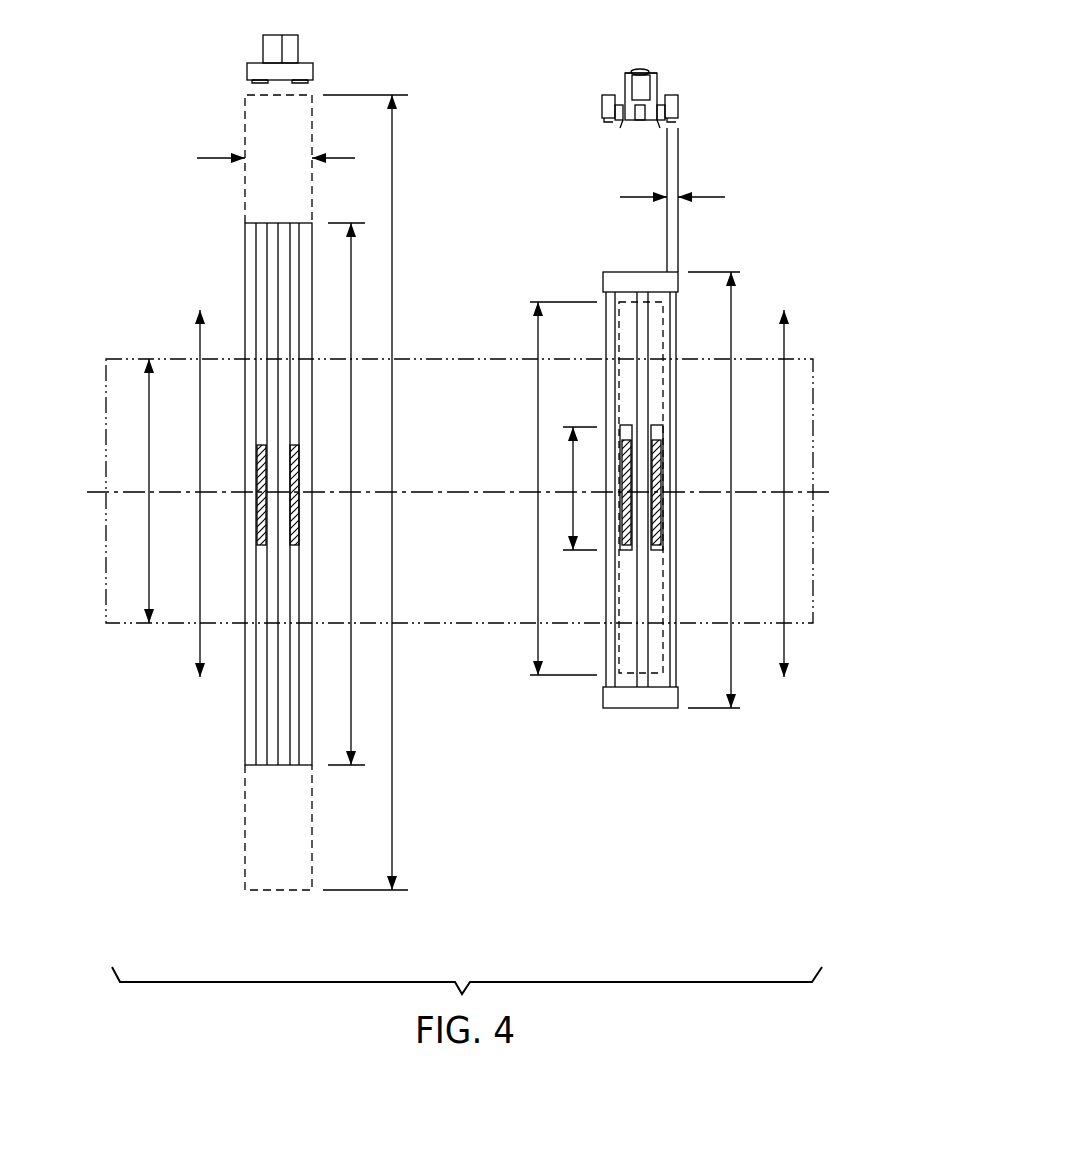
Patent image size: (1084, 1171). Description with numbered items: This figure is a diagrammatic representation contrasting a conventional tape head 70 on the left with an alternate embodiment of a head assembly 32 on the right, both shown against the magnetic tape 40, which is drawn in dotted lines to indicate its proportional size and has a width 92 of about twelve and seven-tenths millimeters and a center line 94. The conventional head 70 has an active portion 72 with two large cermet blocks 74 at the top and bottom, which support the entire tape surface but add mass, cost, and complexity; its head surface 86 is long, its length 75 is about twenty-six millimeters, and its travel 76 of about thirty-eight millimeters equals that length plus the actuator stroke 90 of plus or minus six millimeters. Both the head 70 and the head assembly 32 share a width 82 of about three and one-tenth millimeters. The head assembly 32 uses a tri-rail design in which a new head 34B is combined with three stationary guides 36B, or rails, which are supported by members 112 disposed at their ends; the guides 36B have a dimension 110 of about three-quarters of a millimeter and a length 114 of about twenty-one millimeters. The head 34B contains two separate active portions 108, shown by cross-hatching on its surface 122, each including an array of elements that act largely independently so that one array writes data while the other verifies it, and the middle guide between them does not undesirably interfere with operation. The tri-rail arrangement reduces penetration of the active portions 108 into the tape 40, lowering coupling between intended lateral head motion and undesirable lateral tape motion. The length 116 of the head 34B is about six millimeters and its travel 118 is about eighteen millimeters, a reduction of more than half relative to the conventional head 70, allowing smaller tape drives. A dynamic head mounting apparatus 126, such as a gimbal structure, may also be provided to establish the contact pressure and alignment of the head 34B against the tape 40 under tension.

The head assembly 32 is at (634, 386).
The head 34B is at (653, 85).
The stationary guides 36B is at (610, 96).
The magnetic tape 40 is at (440, 358).
The head 70 is at (289, 462).
The active portion 72 is at (260, 449).
The cermet blocks 74 is at (303, 494).
The length 75 is at (351, 502).
The travel 76 is at (392, 434).
The width 82 is at (338, 158).
The head surface 86 is at (312, 84).
The actuator stroke 90 is at (202, 443).
The width 92 is at (150, 518).
The center line 94 is at (822, 491).
The active portions 108 is at (628, 436).
The length of the guides 110 is at (632, 198).
The members 112 is at (630, 278).
The length 114 is at (733, 553).
The length 116 is at (570, 466).
The travel 118 is at (536, 560).
The surface 122 is at (626, 120).
The dynamic head mounting apparatus 126 is at (642, 70).